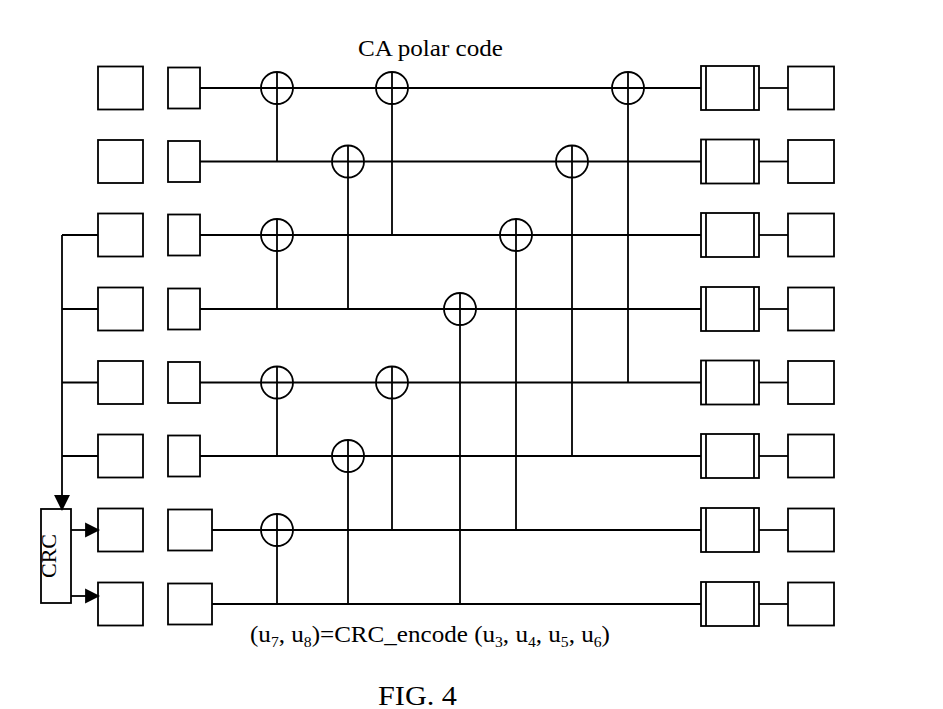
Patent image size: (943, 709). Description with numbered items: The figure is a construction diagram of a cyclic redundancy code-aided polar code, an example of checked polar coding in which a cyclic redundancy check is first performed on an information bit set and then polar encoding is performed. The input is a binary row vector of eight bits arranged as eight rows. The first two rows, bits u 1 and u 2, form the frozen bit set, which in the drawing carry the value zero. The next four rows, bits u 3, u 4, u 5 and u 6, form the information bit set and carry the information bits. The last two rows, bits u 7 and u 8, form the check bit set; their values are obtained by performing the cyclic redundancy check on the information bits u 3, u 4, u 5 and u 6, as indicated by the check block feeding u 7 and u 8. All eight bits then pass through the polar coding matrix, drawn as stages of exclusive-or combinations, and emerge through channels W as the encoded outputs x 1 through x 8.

The polar code channel row 1 (u1 frozen bit 0 to output x1) 1 is at (466, 88).
The polar code channel row 2 (u2 frozen bit 0 to output x2) 2 is at (466, 162).
The polar code channel row 3 (u3 information bit i1 to output x3) 3 is at (466, 235).
The polar code channel row 4 (u4 information bit i2 to output x4) 4 is at (466, 309).
The polar code channel row 5 (u5 information bit i3 to output x5) 5 is at (466, 383).
The polar code channel row 6 (u6 information bit i4 to output x6) 6 is at (466, 456).
The polar code channel row 7 (u7 CRC bit c1 to output x7) 7 is at (466, 530).
The polar code channel row 8 (u8 CRC bit c2 to output x8) 8 is at (466, 604).